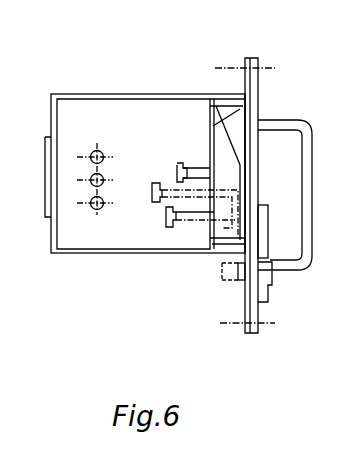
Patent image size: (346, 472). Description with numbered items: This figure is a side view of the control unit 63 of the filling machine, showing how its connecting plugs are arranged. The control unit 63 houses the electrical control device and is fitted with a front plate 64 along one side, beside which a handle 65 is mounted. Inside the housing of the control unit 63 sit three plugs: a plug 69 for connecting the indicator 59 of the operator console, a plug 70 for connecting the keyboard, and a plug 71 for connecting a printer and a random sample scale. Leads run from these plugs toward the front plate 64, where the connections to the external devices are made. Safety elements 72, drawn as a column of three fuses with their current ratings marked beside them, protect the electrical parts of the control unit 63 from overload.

The indicator 59 is at (233, 118).
The control unit 63 is at (73, 98).
The front plate 64 is at (258, 62).
The handle 65 is at (287, 126).
The plug 69 is at (157, 203).
The plug 70 is at (177, 165).
The plug 71 is at (170, 228).
The safety elements 72 is at (96, 143).